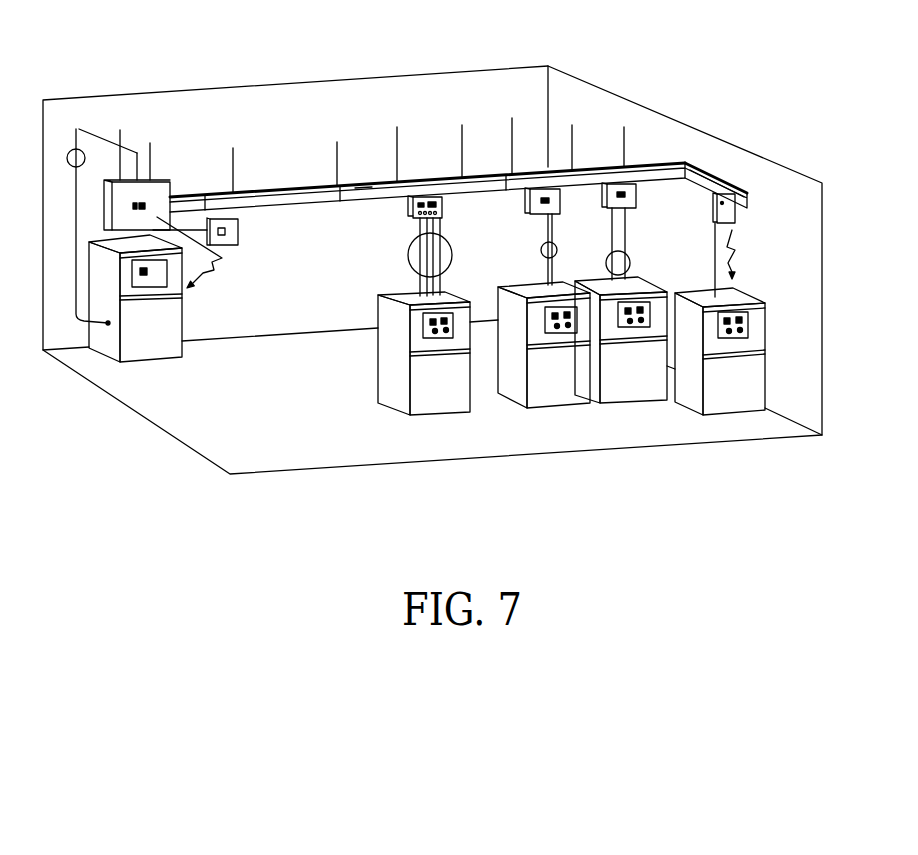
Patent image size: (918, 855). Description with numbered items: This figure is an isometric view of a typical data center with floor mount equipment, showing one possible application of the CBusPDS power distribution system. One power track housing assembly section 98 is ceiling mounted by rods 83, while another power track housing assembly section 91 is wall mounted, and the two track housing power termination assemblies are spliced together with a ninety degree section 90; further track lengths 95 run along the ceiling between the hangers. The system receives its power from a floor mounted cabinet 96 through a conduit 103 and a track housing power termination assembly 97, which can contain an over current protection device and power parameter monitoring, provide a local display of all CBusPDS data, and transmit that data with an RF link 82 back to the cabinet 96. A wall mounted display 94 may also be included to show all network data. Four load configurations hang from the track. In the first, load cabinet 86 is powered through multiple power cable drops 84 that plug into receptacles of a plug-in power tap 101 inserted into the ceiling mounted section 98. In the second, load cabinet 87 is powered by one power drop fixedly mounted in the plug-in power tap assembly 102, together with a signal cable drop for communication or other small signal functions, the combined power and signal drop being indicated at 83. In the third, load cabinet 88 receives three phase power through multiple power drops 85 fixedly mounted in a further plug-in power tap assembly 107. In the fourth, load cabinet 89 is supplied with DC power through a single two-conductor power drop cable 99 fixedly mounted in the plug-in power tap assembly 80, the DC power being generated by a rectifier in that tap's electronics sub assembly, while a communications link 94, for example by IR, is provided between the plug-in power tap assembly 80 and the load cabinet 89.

The plug-in power tap assembly 80 is at (735, 218).
The RF link 82 is at (217, 270).
The rods 83 is at (512, 127).
The power cable drops 84 is at (408, 260).
The power drops 85 is at (632, 263).
The load cabinet 86 is at (388, 377).
The load cabinet 87 is at (515, 381).
The load cabinet 88 is at (630, 387).
The load cabinet 89 is at (688, 392).
The 90 degree section 90 is at (687, 163).
The power track housing assembly section 91 is at (712, 182).
The communications link 94 is at (232, 232).
The rail segment 95 is at (212, 185).
The floor mounted cabinet 96 is at (173, 348).
The track housing power termination assembly 97 is at (160, 193).
The power track housing assembly section 98 is at (363, 190).
The two-conductor power drop cable 99 is at (713, 268).
The plug-in power tap 101 is at (408, 207).
The plug-in power tap assembly 102 is at (530, 203).
The conduit 103 is at (77, 149).
The hanging distribution unit 107 is at (637, 193).